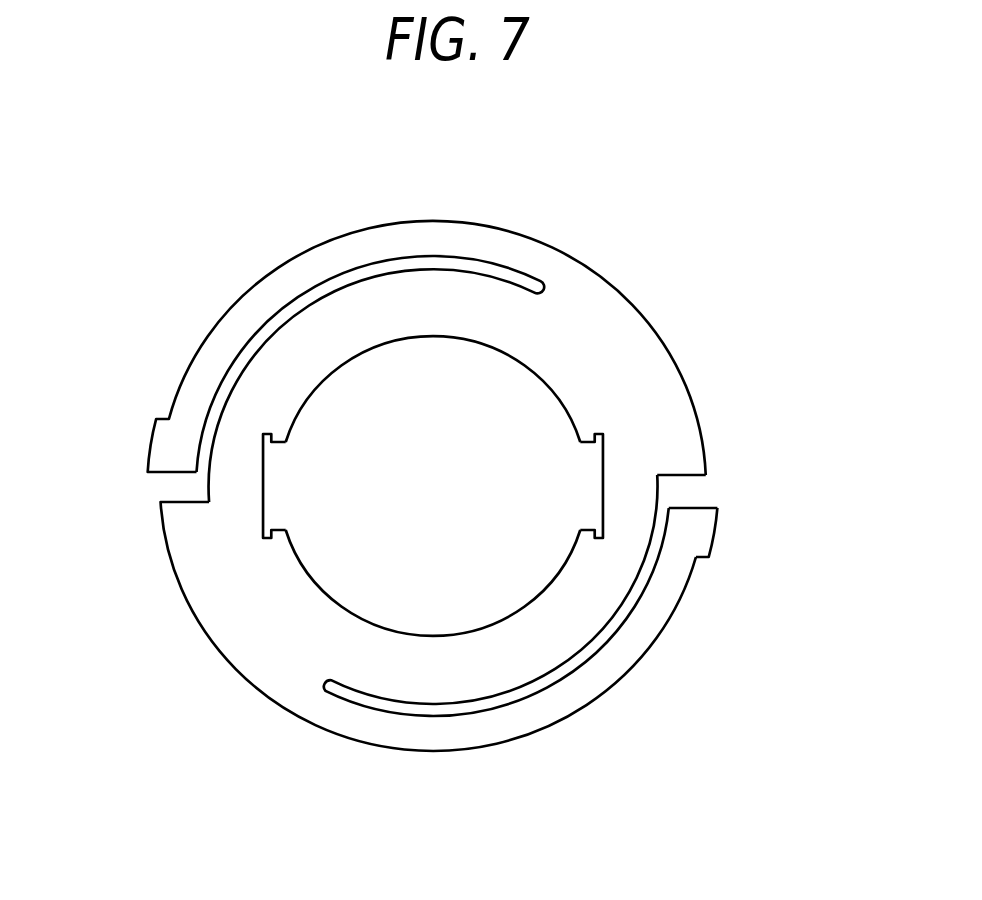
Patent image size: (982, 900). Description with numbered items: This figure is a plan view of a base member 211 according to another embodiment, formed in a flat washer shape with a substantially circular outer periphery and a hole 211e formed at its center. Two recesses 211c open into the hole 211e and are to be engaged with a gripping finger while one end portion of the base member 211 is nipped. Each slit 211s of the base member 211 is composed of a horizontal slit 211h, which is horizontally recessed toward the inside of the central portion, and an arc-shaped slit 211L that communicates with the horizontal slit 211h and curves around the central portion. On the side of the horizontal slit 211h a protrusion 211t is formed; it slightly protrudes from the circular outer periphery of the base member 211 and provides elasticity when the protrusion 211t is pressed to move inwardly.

The base member 211 is at (672, 355).
The slit 211s is at (543, 284).
The arc-shaped slit 211L is at (535, 699).
The horizontal slit 211h is at (703, 494).
The protrusion 211t is at (715, 535).
The hole 211e is at (345, 575).
The recess 211c is at (262, 517).